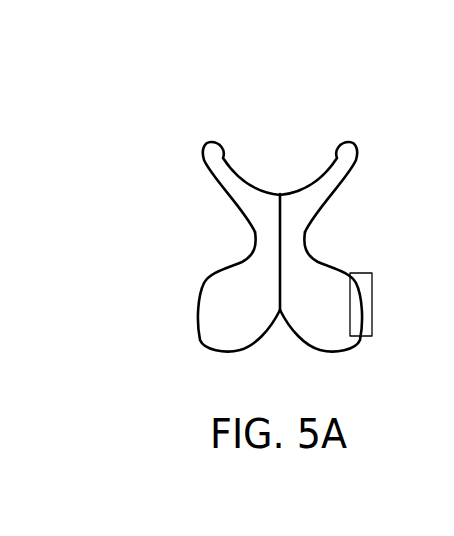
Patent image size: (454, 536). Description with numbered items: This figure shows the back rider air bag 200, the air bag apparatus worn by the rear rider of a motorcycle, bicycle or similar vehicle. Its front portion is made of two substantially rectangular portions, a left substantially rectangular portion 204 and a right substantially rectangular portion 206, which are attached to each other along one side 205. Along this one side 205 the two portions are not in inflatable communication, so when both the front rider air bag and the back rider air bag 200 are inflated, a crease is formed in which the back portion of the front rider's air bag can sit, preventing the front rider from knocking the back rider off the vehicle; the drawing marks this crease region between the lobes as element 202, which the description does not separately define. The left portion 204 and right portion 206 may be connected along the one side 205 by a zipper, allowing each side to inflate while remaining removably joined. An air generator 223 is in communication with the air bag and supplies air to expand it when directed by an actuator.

The back rider air bag 200 is at (202, 130).
The slit 202 is at (278, 337).
The left substantially rectangular portion 204 is at (210, 293).
The one side 205 is at (273, 194).
The right substantially rectangular portion 206 is at (347, 343).
The air generator 223 is at (358, 285).